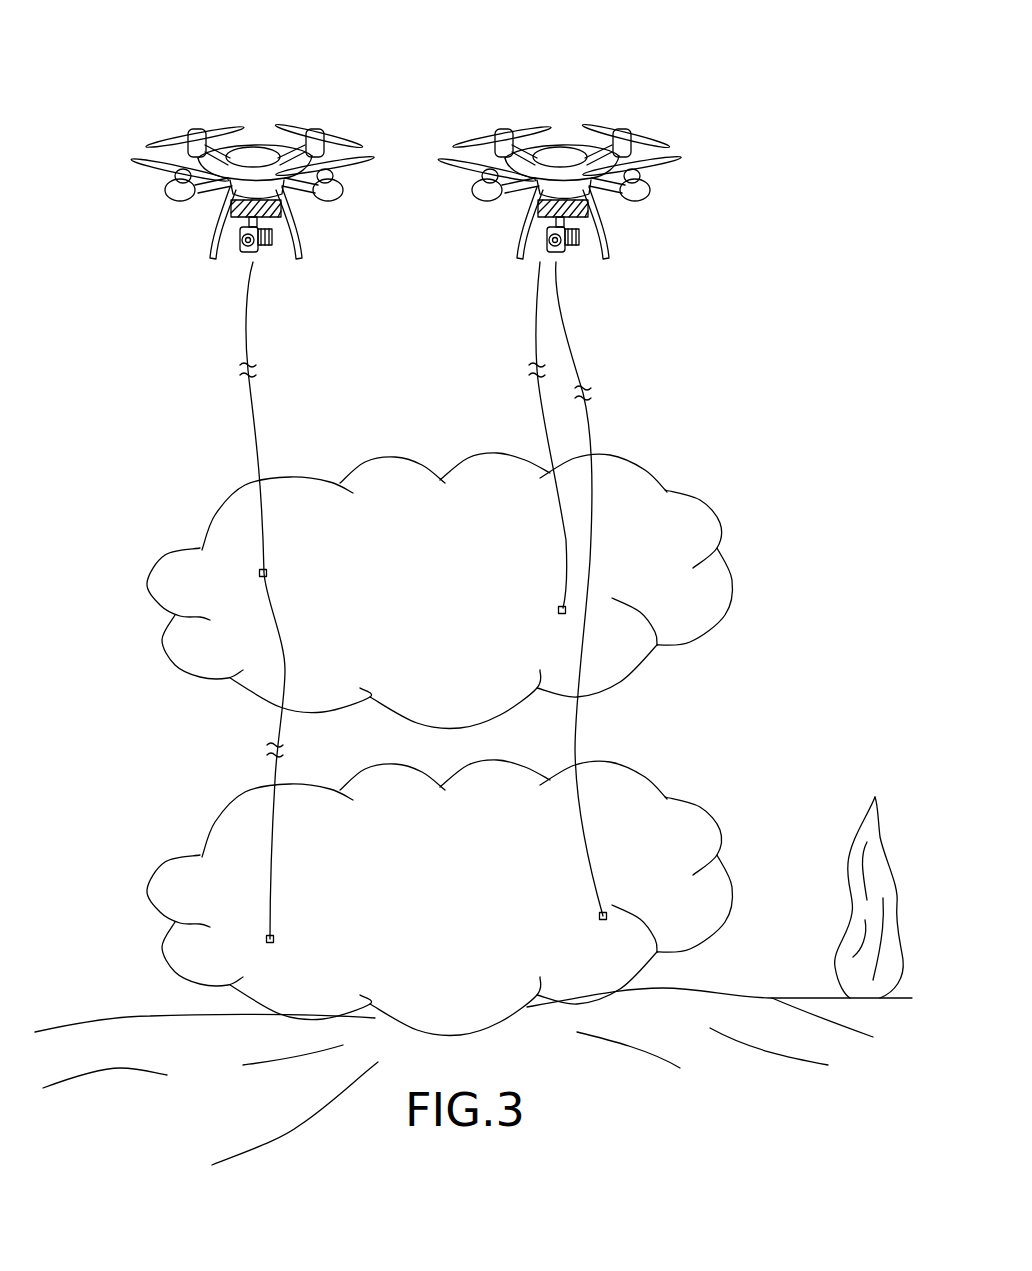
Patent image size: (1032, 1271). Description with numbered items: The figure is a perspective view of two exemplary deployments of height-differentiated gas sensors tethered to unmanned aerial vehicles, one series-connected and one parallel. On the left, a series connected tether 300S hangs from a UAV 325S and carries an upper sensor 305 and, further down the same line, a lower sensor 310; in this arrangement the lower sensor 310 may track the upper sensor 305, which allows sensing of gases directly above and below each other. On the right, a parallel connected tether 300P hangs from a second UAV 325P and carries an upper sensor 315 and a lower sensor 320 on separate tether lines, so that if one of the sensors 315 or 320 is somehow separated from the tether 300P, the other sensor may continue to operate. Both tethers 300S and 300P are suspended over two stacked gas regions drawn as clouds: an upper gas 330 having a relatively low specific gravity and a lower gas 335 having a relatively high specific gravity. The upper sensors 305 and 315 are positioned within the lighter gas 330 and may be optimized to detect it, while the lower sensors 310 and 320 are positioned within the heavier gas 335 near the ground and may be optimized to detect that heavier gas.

The UAV 325S is at (230, 98).
The UAV 325P is at (613, 98).
The series connected tether 300S is at (243, 423).
The parallel connected tether 300P is at (557, 348).
The upper sensor 305 is at (249, 573).
The lower sensor 310 is at (256, 939).
The upper sensor 315 is at (548, 610).
The lower sensor 320 is at (589, 916).
The gas with relatively low specific gravity 330 is at (440, 540).
The gas with relatively high specific gravity 335 is at (442, 855).